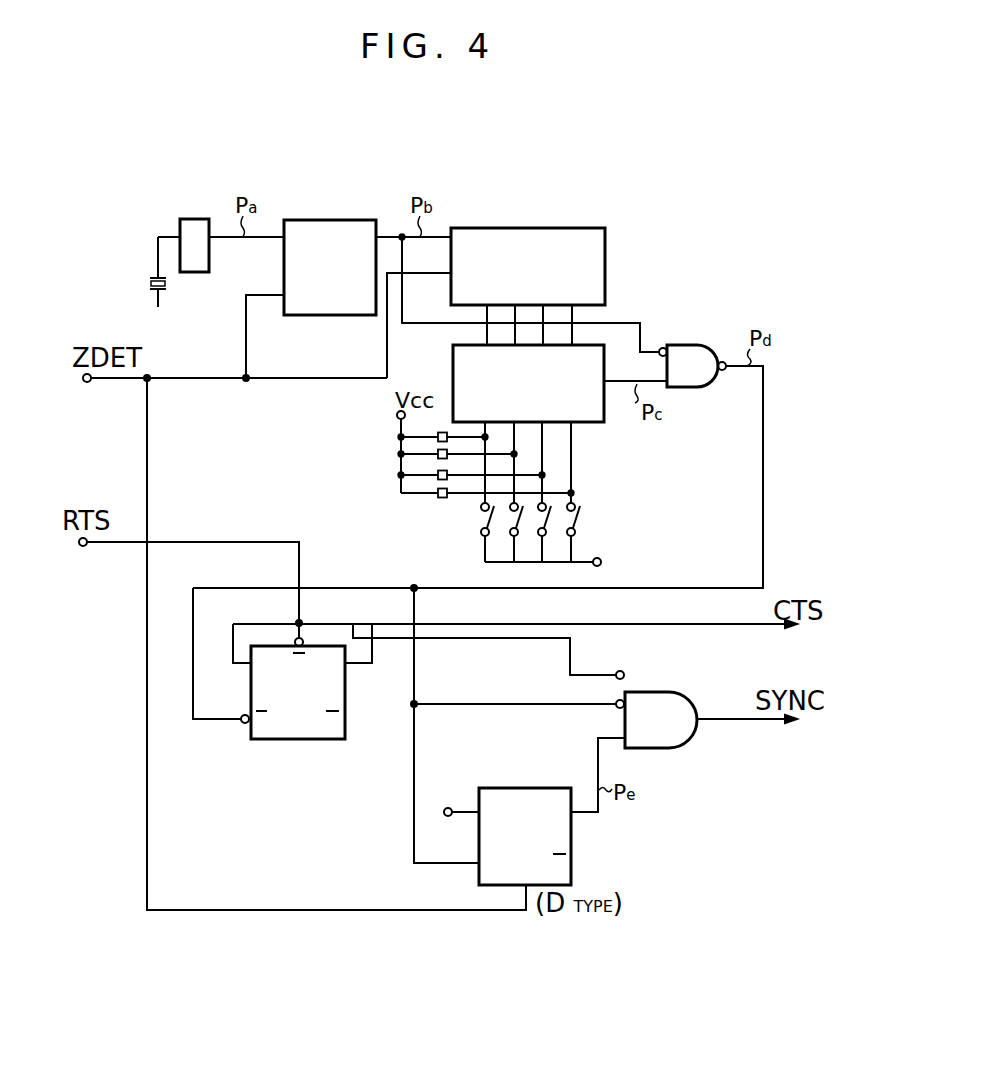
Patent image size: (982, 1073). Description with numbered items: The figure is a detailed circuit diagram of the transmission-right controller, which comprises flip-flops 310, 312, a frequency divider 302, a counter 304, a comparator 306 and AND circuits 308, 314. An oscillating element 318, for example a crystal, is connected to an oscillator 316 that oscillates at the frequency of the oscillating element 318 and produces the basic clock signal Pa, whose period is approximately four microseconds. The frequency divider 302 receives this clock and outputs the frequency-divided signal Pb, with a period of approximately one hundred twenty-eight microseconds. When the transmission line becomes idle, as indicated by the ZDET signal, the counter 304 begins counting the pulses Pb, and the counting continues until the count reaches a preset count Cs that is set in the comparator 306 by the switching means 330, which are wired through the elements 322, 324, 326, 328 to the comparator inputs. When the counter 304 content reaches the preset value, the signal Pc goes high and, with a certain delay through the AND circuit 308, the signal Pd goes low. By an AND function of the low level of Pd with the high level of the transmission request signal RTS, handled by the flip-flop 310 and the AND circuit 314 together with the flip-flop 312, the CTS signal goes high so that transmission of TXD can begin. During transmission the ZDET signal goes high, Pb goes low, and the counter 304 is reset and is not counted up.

The frequency divider 302 is at (342, 220).
The counter 304 is at (581, 225).
The comparator 306 is at (596, 425).
The AND circuit 308 is at (692, 345).
The flip-flop 310 is at (297, 741).
The flip-flop 312 is at (531, 788).
The AND circuit 314 is at (652, 692).
The oscillator 316 is at (194, 219).
The oscillating element 318 is at (148, 287).
The resistor 322 is at (438, 433).
The resistor 324 is at (437, 456).
The resistor 326 is at (437, 478).
The resistor 328 is at (441, 499).
The switching means 330 is at (604, 503).